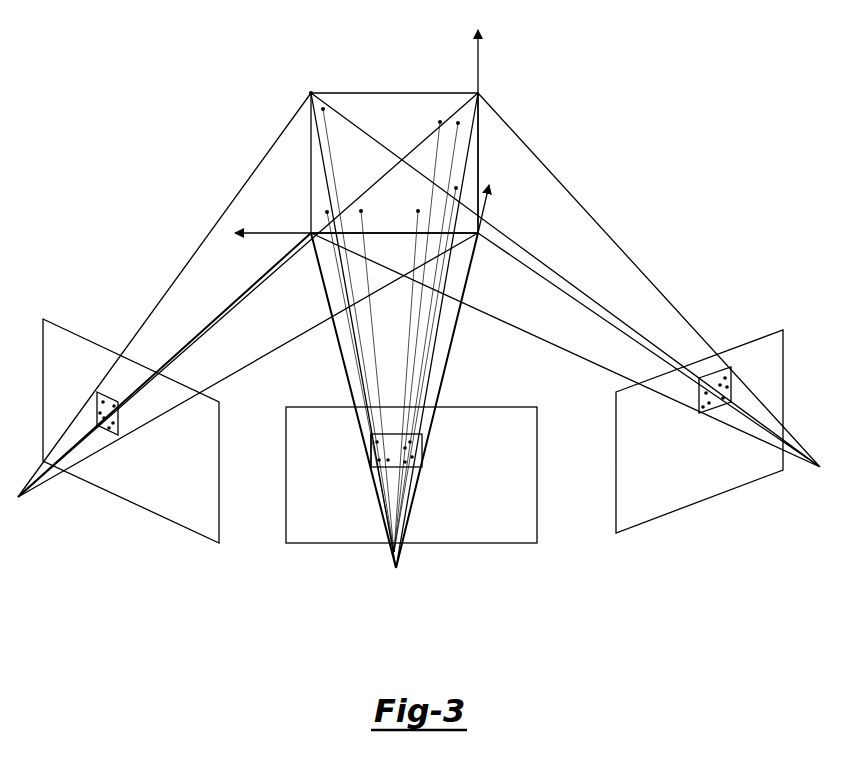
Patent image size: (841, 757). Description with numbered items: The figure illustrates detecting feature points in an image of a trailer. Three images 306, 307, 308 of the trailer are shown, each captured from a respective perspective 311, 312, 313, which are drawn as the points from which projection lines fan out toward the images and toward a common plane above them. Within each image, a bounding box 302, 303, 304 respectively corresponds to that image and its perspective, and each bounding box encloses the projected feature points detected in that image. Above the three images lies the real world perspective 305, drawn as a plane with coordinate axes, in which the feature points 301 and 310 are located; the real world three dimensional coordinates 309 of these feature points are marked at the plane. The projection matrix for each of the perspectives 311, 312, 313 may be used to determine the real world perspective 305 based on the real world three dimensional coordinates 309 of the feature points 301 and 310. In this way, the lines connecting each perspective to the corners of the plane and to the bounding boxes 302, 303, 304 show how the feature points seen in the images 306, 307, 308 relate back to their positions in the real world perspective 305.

The feature points 301 is at (439, 121).
The bounding box 302 is at (108, 394).
The bounding box 303 is at (423, 443).
The bounding box 304 is at (710, 377).
The real world perspective 305 is at (365, 91).
The image 306 is at (43, 347).
The image 307 is at (285, 475).
The image 308 is at (784, 355).
The real world three dimensional coordinates 309 is at (299, 81).
The feature points 310 is at (357, 461).
The perspective 311 is at (248, 304).
The perspective 312 is at (394, 337).
The perspective 313 is at (571, 294).